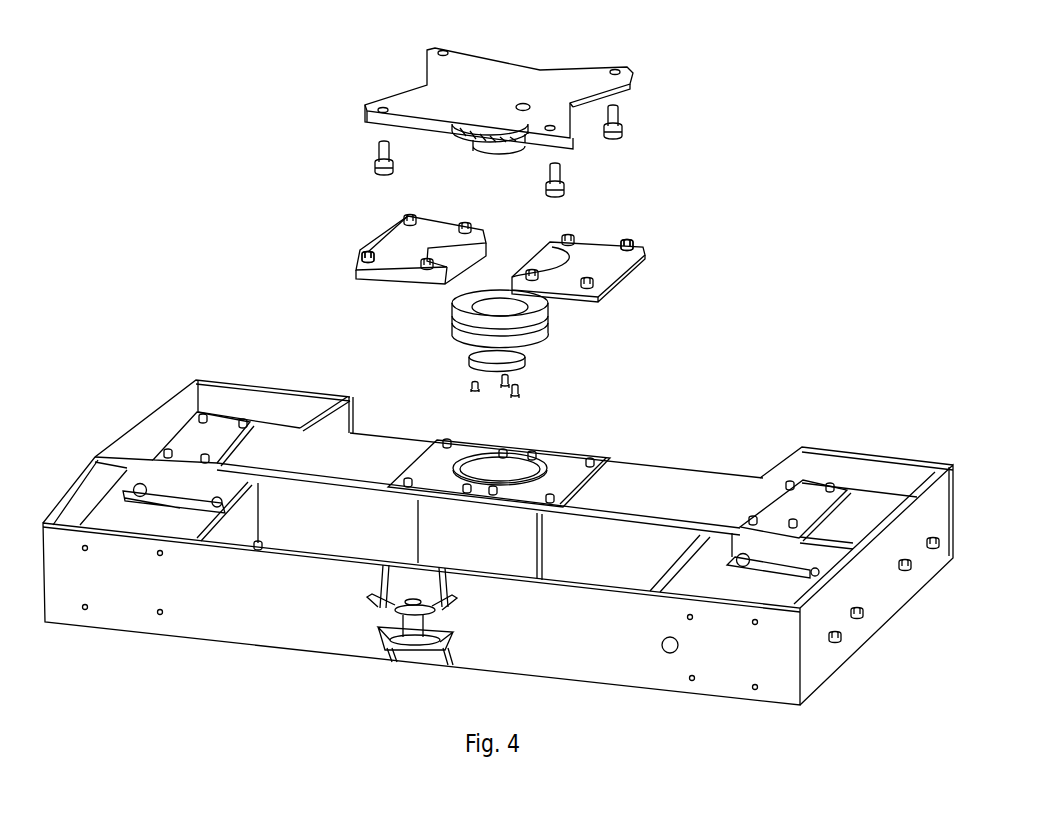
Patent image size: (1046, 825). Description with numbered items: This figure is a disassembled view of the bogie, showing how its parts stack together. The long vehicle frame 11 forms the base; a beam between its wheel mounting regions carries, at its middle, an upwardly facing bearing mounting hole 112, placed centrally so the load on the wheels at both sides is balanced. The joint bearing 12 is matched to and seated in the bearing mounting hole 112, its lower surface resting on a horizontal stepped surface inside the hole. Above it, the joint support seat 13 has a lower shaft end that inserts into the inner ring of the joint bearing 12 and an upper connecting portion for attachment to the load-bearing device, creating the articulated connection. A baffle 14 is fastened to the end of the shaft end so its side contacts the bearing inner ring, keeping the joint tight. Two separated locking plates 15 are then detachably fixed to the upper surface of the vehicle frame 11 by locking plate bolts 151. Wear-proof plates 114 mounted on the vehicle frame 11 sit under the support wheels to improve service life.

The vehicle frame 11 is at (300, 602).
The bearing mounting hole 112 is at (510, 477).
The wear-proof plate 114 is at (200, 443).
The joint bearing 12 is at (549, 330).
The joint support seat 13 is at (508, 93).
The baffle 14 is at (527, 372).
The locking plate 15 is at (398, 238).
The locking plate bolt 151 is at (368, 252).